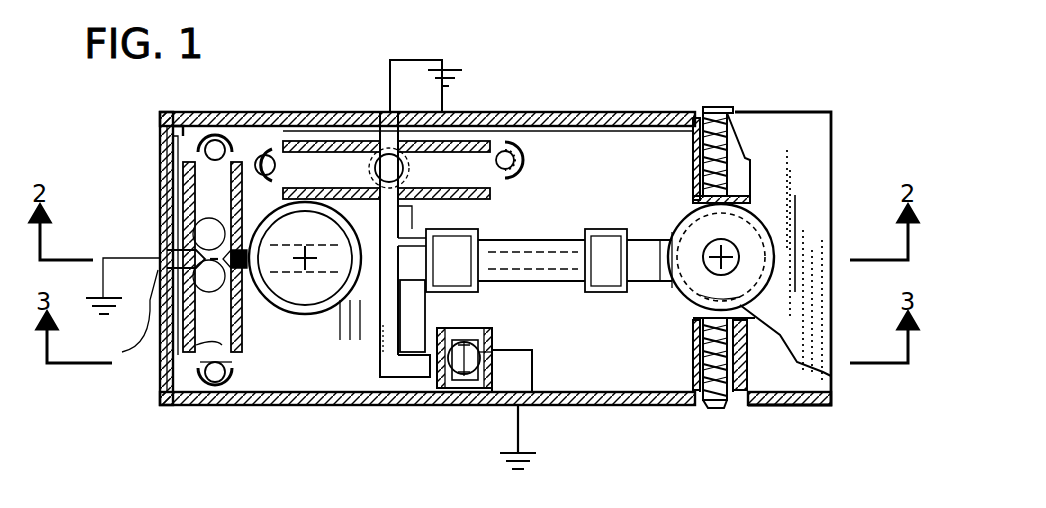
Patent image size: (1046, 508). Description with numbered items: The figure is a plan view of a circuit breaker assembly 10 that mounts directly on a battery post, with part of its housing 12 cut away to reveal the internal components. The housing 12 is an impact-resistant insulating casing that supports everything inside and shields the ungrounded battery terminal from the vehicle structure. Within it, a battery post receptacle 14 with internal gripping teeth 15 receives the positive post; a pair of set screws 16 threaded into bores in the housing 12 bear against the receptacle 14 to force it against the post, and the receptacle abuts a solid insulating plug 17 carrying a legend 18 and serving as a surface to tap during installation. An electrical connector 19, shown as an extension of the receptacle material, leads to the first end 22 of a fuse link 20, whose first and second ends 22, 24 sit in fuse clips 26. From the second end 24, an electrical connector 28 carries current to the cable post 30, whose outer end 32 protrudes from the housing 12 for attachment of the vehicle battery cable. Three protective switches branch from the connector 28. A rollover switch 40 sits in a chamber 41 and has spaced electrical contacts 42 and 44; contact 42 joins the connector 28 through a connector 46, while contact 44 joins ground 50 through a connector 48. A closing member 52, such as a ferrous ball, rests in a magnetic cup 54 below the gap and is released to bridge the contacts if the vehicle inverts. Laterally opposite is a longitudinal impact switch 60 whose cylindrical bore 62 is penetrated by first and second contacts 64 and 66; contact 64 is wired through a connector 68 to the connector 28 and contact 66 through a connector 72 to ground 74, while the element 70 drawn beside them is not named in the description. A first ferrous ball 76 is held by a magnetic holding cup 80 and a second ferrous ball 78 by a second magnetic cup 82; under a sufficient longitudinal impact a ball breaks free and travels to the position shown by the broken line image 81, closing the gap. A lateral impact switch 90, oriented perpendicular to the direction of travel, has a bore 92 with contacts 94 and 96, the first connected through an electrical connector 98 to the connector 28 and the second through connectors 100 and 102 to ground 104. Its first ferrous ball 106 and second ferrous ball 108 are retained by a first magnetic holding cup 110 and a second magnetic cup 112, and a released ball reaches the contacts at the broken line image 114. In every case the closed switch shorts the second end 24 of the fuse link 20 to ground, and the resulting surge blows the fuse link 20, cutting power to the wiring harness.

The circuit breaker assembly 10 is at (800, 97).
The housing 12 is at (825, 112).
The battery post receptacle 14 is at (768, 264).
The teeth 15 is at (742, 260).
The set screws 16 is at (735, 108).
The plug 17 is at (748, 238).
The legend 18 is at (740, 305).
The electrical connector 19 is at (640, 282).
The fuse link 20 is at (600, 232).
The first end 22 is at (620, 300).
The second end 24 is at (480, 272).
The fuse clips 26 is at (610, 232).
The electrical connector 28 is at (362, 300).
The cable post 30 is at (350, 300).
The outer end 32 is at (338, 300).
The rollover switch 40 is at (533, 352).
The chamber 41 is at (490, 332).
The electrical contact 42 is at (462, 395).
The electrical contact 44 is at (480, 392).
The connector 46 is at (372, 392).
The connector 48 is at (522, 378).
The ground 50 is at (535, 452).
The closing member 52 is at (467, 395).
The cup 54 is at (472, 395).
The longitudinal impact switch 60 is at (533, 165).
The bore 62 is at (482, 200).
The first electrical contact 64 is at (372, 145).
The second electrical contact 66 is at (385, 135).
The connector 68 is at (400, 210).
The hub 70 is at (440, 140).
The connector 72 is at (390, 60).
The ground 74 is at (455, 68).
The first ferrous ball 76 is at (515, 112).
The second ferrous ball 78 is at (270, 148).
The magnetic holding cup 80 is at (525, 122).
The broken line image 81 is at (445, 135).
The second magnetic cup 82 is at (252, 130).
The lateral impact switch 90 is at (268, 318).
The bore 92 is at (328, 318).
The first electrical contact 94 is at (205, 255).
The second electrical contact 96 is at (232, 262).
The electrical connector 98 is at (252, 335).
The connector 100 is at (124, 315).
The connector 102 is at (128, 258).
The ground 104 is at (78, 302).
The first ferrous ball 106 is at (185, 165).
The second ferrous ball 108 is at (214, 395).
The first magnetic holding cup 110 is at (175, 137).
The second magnetic cup 112 is at (210, 368).
The broken line image 114 is at (205, 355).